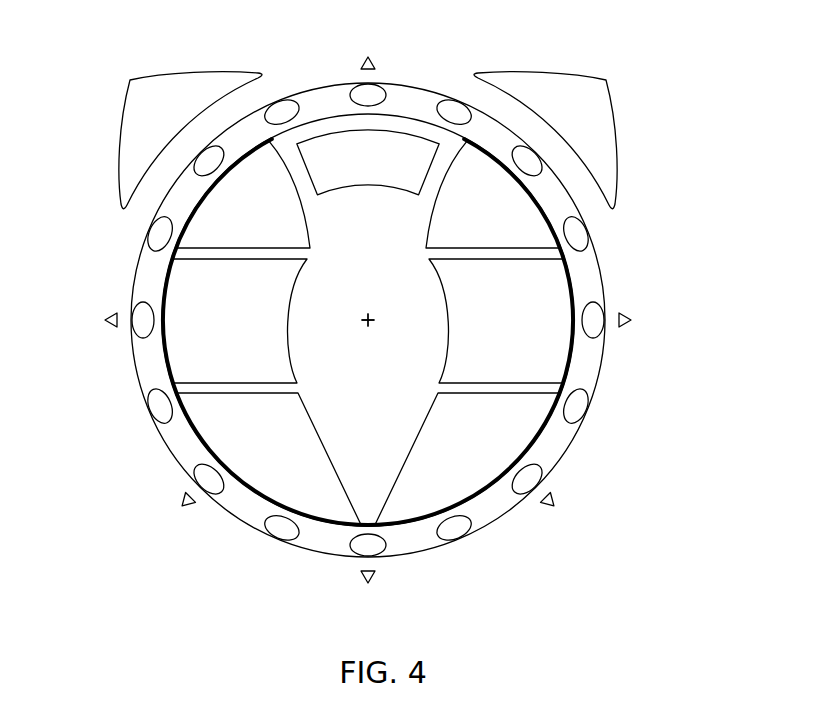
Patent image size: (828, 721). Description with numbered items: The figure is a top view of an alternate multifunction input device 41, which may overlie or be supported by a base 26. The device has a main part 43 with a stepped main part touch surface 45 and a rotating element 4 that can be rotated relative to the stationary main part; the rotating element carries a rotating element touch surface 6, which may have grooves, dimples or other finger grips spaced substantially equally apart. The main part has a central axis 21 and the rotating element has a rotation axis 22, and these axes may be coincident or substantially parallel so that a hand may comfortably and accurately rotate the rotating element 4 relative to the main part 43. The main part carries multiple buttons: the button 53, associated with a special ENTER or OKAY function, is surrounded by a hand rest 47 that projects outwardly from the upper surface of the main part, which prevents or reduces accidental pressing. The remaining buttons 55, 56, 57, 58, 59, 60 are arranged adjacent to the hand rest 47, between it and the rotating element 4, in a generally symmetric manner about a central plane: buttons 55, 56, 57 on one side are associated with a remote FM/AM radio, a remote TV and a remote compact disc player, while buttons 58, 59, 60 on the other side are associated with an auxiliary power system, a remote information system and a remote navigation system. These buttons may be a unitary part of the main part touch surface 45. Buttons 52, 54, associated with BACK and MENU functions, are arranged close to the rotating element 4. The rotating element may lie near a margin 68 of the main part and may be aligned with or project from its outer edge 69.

The rotating element 4 is at (606, 253).
The rotating element touch surface 6 is at (604, 286).
The central axis 21 is at (359, 312).
The rotation axis 22 is at (359, 331).
The base 26 is at (573, 567).
The multifunction input device 41 is at (658, 107).
The main part 43 is at (581, 357).
The main part touch surface 45 is at (569, 374).
The hand rest 47 is at (180, 362).
The button 52 is at (185, 78).
The button 53 is at (408, 143).
The button 54 is at (563, 78).
The button 55 is at (203, 217).
The button 56 is at (180, 278).
The button 57 is at (215, 440).
The button 58 is at (417, 507).
The button 59 is at (562, 300).
The button 60 is at (525, 205).
The margin 68 is at (315, 533).
The outer edge 69 is at (282, 529).